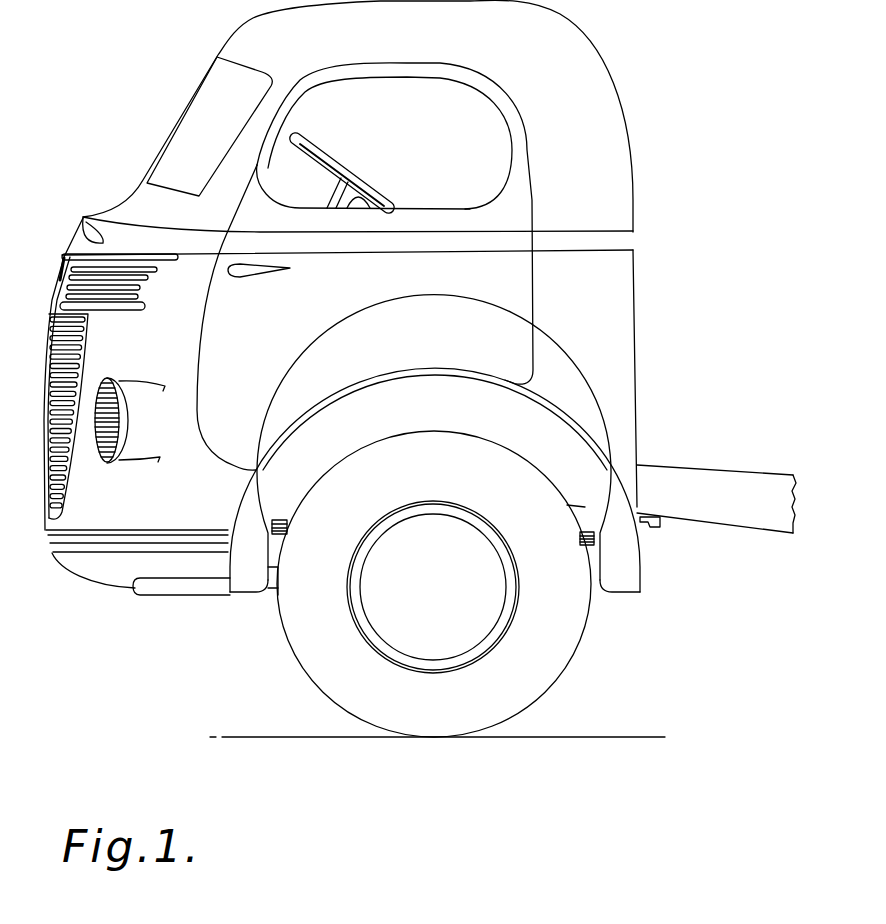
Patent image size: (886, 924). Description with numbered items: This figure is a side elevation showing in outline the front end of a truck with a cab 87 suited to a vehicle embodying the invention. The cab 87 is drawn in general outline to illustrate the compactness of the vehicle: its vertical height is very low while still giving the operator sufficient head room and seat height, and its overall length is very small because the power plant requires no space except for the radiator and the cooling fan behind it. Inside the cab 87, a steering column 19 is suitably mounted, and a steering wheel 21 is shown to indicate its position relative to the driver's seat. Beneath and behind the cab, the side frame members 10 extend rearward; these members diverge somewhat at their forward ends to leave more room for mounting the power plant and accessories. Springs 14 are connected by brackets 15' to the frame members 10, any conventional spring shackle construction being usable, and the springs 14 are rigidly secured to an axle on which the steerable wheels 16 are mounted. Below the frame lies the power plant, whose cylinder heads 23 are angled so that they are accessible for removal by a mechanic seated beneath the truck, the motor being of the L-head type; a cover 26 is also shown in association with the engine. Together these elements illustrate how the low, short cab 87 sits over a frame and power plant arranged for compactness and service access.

The side frame members 10 is at (757, 458).
The springs 14 is at (600, 560).
The brackets 15' is at (671, 541).
The steerable wheels 16 is at (550, 656).
The steering column 19 is at (328, 191).
The steering wheel 21 is at (331, 166).
The cylinder heads 23 is at (272, 568).
The cover 26 is at (273, 590).
The cab 87 is at (613, 200).